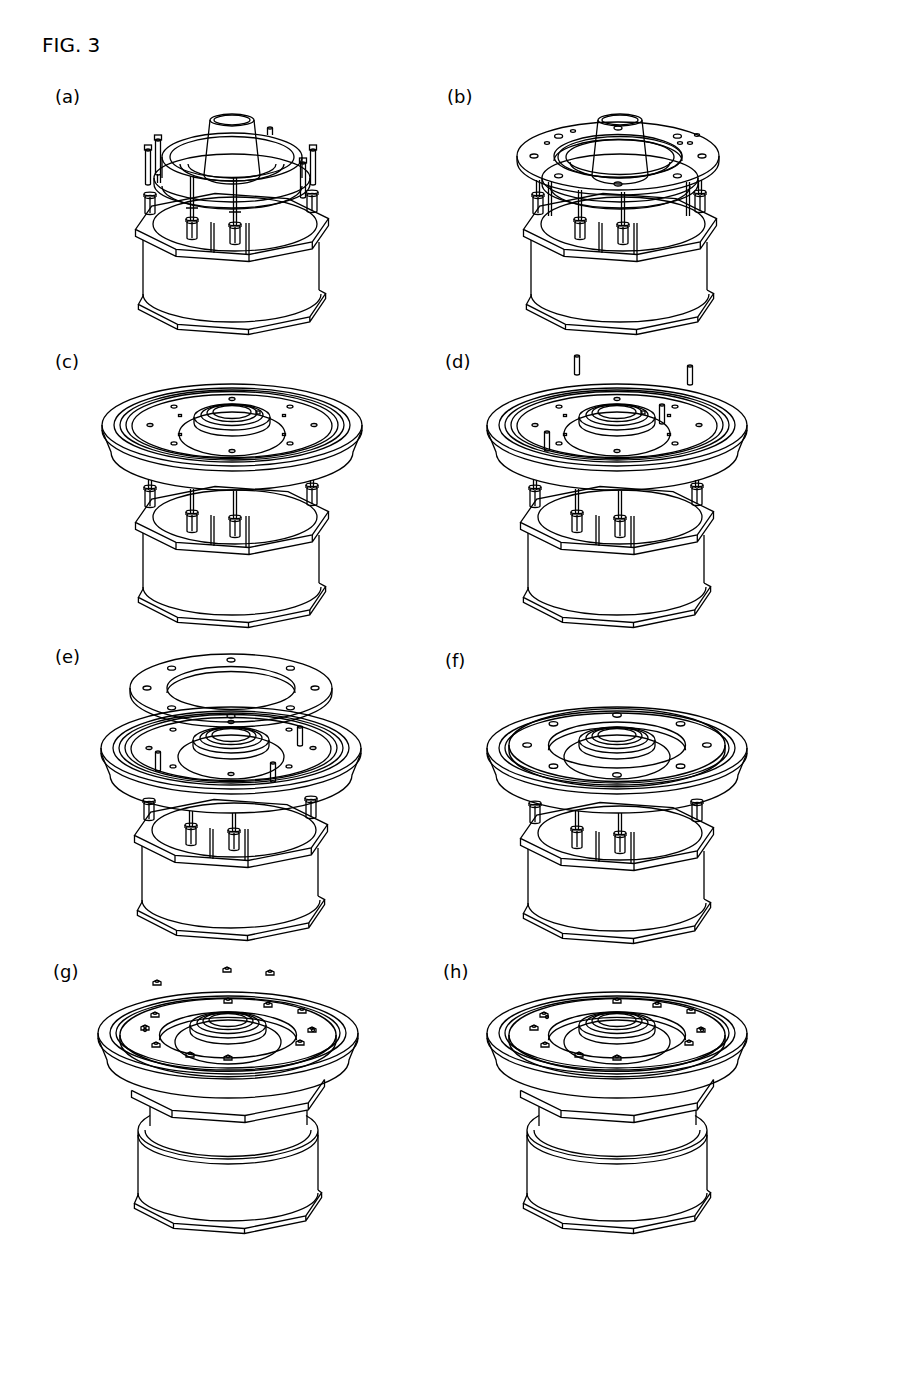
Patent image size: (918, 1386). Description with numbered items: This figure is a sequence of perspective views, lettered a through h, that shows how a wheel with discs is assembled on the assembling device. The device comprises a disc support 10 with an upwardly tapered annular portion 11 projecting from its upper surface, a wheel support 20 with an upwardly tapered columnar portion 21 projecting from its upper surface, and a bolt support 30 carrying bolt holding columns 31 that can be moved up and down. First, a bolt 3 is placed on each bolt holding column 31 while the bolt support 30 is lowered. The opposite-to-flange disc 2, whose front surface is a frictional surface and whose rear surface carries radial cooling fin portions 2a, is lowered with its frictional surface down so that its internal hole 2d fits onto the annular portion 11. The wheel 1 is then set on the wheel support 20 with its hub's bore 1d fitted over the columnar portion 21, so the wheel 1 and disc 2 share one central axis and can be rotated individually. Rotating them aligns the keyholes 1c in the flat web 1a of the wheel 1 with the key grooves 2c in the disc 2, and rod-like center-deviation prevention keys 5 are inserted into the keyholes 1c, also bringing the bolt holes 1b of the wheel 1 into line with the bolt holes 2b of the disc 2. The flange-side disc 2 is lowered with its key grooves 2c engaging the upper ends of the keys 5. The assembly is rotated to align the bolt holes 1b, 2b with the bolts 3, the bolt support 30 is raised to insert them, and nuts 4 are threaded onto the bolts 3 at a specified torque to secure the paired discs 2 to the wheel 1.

The wheel 1 is at (735, 1065).
The web 1a is at (323, 724).
The bolt holes 1b is at (313, 752).
The keyholes 1c is at (700, 425).
The hub's bore 1d is at (648, 413).
The disc 2 is at (282, 1012).
The cooling fin portions 2a is at (693, 154).
The bolt holes 2b is at (533, 740).
The key grooves 2c is at (697, 135).
The internal hole 2d is at (680, 143).
The bolts 3 is at (702, 1030).
The nuts 4 is at (705, 1028).
The center-deviation prevention keys 5 is at (152, 760).
The disc support 10 is at (305, 155).
The annular portion 11 is at (670, 148).
The wheel support 20 is at (200, 160).
The columnar portion 21 is at (611, 410).
The bolt support 30 is at (700, 1102).
The bolt holding columns 31 is at (698, 837).